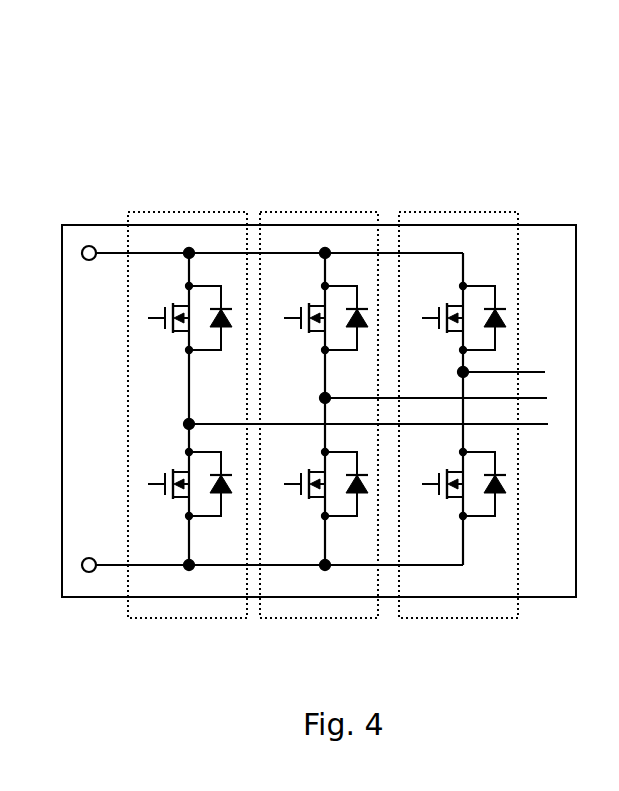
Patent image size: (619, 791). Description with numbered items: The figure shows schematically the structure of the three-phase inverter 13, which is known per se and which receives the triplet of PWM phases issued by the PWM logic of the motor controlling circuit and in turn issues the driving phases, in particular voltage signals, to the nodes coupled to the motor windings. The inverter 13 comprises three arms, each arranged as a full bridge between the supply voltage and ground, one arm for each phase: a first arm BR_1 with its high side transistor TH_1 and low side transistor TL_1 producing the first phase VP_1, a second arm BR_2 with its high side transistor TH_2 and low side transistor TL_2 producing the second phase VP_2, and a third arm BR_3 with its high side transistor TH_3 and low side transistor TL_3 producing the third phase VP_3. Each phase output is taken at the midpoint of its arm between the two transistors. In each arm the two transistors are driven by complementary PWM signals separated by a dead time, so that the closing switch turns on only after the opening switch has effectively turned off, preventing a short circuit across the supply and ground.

The inverter 13 is at (325, 346).
The first phase index 1 is at (221, 212).
The second phase index 2 is at (366, 212).
The third phase index 3 is at (505, 212).